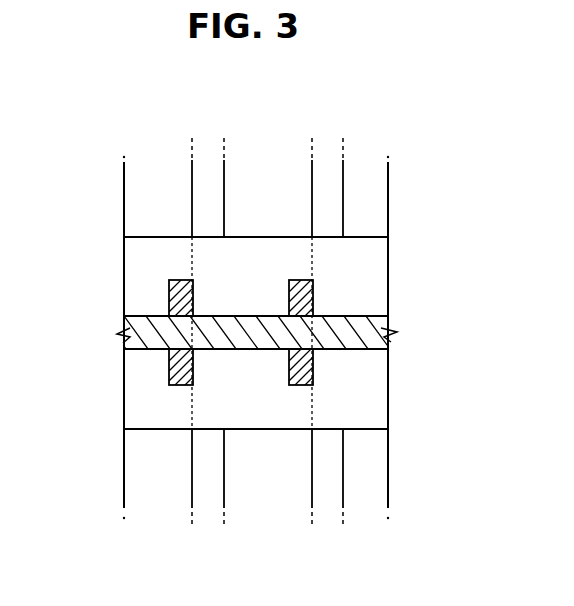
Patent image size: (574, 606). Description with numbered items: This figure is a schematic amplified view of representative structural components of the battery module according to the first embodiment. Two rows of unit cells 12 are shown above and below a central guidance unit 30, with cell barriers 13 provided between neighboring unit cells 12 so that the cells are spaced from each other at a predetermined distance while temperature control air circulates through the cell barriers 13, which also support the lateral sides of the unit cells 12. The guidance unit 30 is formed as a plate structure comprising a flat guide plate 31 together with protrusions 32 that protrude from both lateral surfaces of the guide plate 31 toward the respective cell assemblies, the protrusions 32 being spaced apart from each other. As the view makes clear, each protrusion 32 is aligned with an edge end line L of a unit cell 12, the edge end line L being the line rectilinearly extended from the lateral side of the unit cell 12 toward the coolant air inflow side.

The unit cell 12 is at (160, 168).
The cell barrier 13 is at (207, 168).
The guidance unit 30 is at (130, 312).
The guide plate 31 is at (385, 340).
The protrusion 32 is at (169, 284).
The edge end line L is at (193, 250).